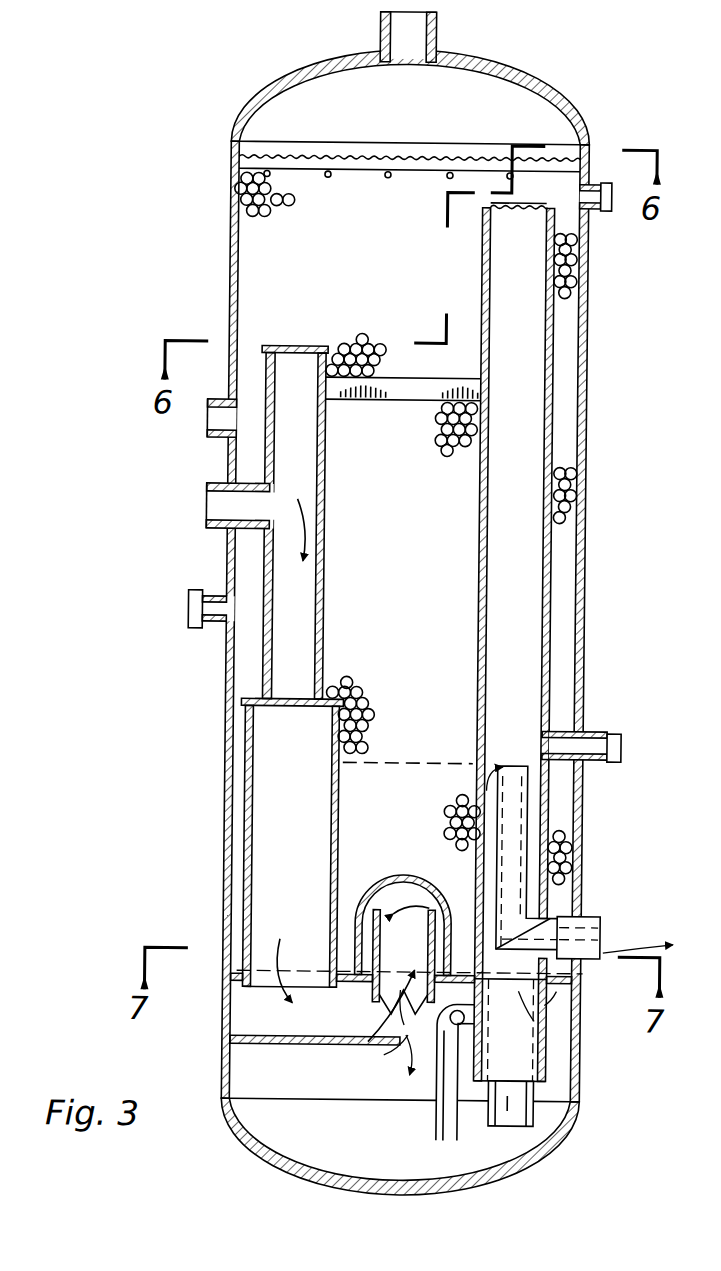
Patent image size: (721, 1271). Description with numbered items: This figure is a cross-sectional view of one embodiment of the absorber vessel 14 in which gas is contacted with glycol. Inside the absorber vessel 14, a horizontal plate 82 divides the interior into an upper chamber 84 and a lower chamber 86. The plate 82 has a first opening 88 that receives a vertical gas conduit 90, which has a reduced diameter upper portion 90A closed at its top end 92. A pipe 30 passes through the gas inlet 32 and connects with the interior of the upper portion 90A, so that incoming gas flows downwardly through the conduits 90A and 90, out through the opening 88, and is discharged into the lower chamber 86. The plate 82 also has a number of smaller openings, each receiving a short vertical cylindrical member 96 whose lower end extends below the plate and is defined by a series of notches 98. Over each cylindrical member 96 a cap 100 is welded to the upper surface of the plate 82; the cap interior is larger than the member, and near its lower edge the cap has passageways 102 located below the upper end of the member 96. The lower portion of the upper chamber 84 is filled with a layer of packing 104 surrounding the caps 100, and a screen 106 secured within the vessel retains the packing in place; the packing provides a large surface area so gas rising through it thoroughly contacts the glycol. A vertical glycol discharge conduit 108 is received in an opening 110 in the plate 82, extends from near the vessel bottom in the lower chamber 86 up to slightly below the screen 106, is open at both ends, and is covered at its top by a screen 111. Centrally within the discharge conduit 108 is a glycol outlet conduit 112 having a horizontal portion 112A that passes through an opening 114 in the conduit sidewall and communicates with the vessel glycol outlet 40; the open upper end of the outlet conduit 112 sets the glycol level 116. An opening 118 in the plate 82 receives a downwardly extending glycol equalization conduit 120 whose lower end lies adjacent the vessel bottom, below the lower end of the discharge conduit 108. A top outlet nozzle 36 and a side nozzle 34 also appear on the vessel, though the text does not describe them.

The absorber vessel 14 is at (586, 652).
The top outlet nozzle 36 is at (374, 22).
The screen 106 is at (422, 156).
The glycol discharge conduit 108 is at (585, 596).
The screen 111 is at (514, 208).
The top end 92 is at (292, 348).
The reduced diameter upper portion 90A is at (323, 592).
The nozzle 34 is at (205, 437).
The gas inlet 32 is at (210, 489).
The pipe 30 is at (221, 510).
The upper chamber 84 is at (420, 541).
The glycol level 116 is at (397, 762).
The vertical gas conduit 90 is at (341, 792).
The cap 100 is at (430, 878).
The vertical cylindrical member 96 is at (448, 926).
The passageways 102 is at (357, 957).
The notches 98 is at (396, 1003).
The lower chamber 86 is at (341, 1087).
The first opening 88 is at (250, 940).
The glycol outlet conduit 112 is at (529, 803).
The horizontal portion 112A is at (525, 926).
The packing 104 is at (571, 852).
The opening 114 is at (603, 943).
The vessel glycol outlet 40 is at (592, 958).
The opening 110 is at (492, 984).
The glycol equalization conduit 120 is at (530, 1098).
The horizontal plate 82 is at (543, 985).
The opening 118 is at (532, 1017).